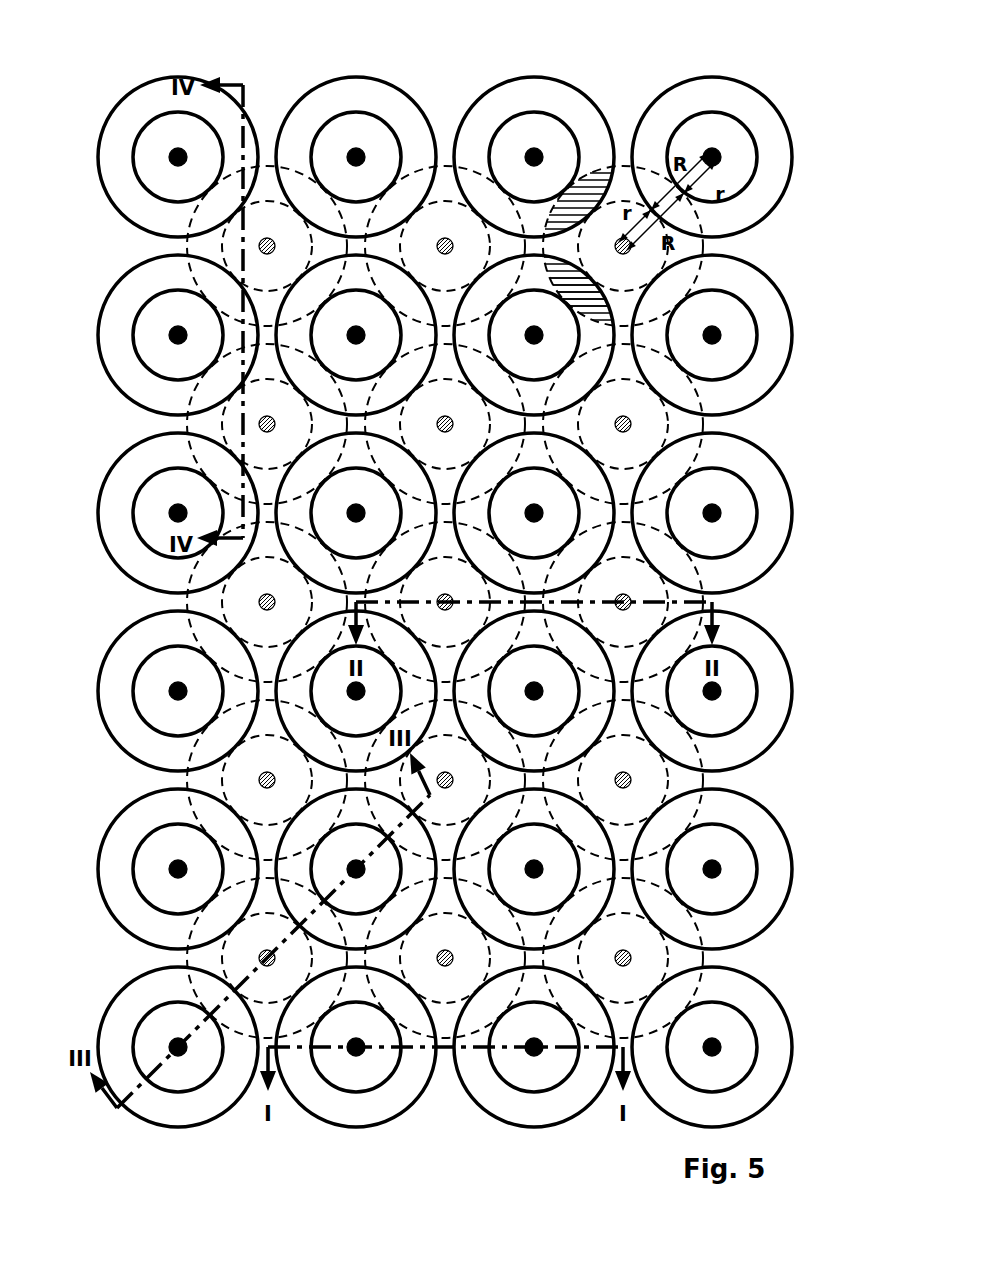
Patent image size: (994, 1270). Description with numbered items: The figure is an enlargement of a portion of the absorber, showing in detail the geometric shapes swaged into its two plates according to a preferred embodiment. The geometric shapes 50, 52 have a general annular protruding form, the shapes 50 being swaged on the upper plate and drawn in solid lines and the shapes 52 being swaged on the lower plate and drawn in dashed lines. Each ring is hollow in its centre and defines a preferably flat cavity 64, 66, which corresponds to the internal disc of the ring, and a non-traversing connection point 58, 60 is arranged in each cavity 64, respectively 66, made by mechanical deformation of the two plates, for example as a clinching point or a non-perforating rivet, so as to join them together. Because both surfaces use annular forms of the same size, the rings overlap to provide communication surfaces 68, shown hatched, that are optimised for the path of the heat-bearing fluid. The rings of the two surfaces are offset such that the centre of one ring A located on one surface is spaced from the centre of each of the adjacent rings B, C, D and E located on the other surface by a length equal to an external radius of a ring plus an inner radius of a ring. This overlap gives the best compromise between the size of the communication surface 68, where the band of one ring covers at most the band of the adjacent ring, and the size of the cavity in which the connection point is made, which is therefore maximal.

The geometric shape 50 is at (128, 556).
The geometric shape 52 is at (207, 777).
The connection point 58 is at (172, 510).
The connection point 60 is at (260, 779).
The cavity 64 is at (160, 485).
The cavity 66 is at (243, 763).
The communication surface 68 is at (571, 188).
The ring A is at (623, 187).
The adjacent ring B is at (567, 107).
The adjacent ring C is at (672, 108).
The adjacent ring D is at (590, 278).
The adjacent ring E is at (752, 295).